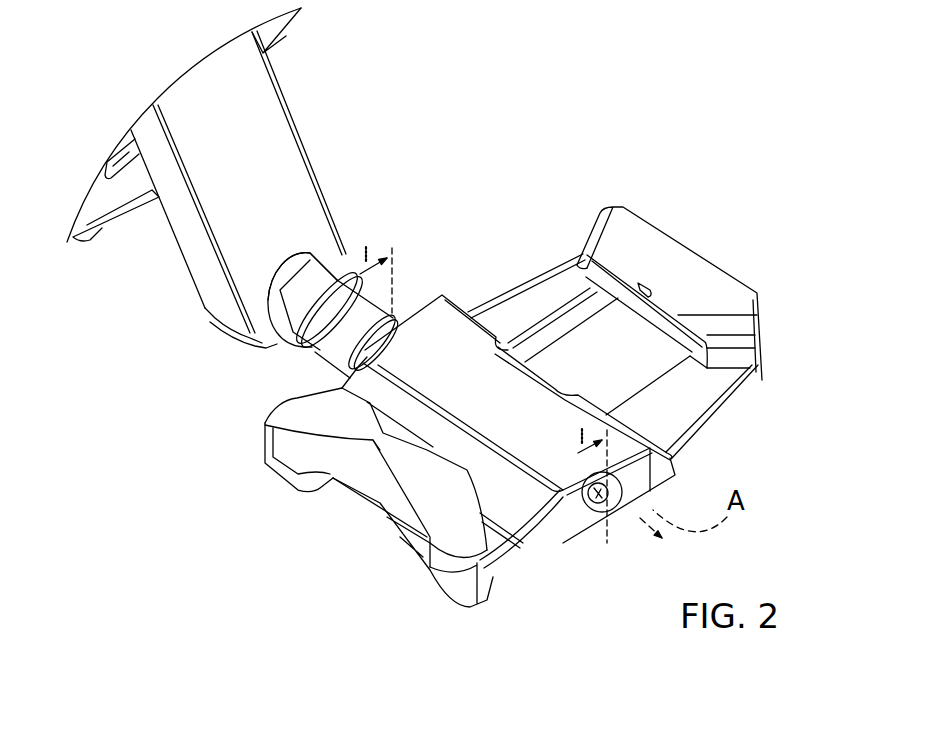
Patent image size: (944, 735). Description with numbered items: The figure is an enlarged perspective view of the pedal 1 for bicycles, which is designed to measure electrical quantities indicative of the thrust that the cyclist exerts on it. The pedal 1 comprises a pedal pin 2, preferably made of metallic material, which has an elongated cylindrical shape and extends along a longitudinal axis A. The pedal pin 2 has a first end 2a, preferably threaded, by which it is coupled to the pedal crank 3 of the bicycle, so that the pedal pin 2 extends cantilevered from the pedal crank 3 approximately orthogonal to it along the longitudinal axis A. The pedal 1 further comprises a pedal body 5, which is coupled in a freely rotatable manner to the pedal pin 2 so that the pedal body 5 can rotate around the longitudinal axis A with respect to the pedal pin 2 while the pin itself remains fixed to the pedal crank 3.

The pedal 1 is at (787, 242).
The pedal pin 2 is at (325, 358).
The first end 2a is at (325, 245).
The pedal crank 3 is at (277, 155).
The pedal body 5 is at (687, 268).